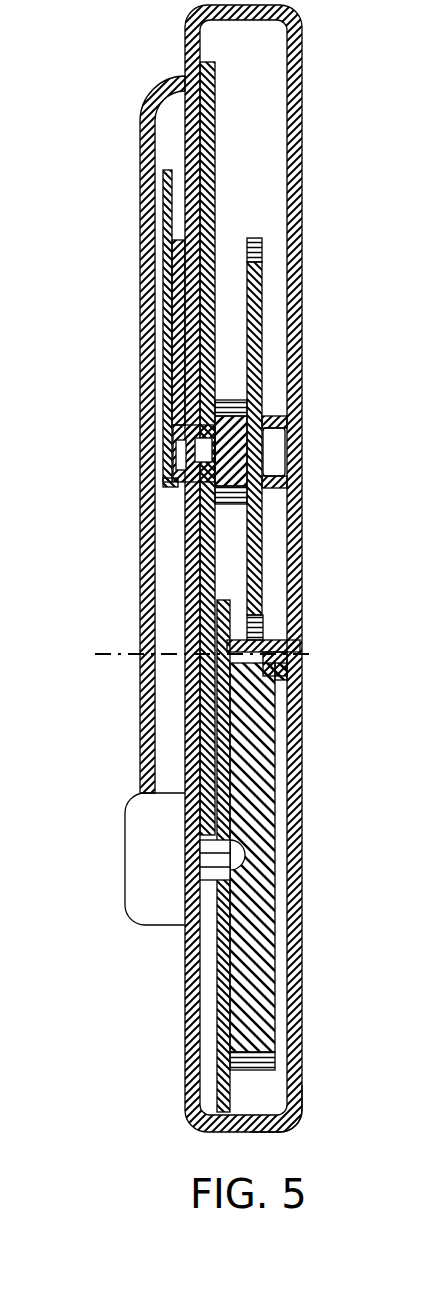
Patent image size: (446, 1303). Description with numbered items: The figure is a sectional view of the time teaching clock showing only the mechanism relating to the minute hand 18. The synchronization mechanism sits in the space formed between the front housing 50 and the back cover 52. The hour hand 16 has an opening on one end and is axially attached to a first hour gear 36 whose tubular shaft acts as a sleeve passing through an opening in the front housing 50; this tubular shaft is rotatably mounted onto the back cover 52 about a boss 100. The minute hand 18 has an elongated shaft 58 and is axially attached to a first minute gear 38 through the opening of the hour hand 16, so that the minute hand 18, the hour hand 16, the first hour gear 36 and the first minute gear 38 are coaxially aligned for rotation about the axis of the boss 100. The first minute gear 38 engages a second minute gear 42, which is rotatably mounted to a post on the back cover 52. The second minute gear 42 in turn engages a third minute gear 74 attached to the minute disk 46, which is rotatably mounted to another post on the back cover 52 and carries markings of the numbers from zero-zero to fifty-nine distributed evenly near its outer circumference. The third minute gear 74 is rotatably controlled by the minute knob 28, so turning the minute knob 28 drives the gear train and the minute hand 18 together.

The hour hand 16 is at (160, 265).
The minute hand 18 is at (165, 200).
The minute knob 28 is at (135, 858).
The first hour gear 36 is at (232, 402).
The first minute gear 38 is at (262, 288).
The second minute gear 42 is at (262, 630).
The minute disk 46 is at (218, 1005).
The front housing 50 is at (185, 1103).
The back cover 52 is at (303, 1100).
The elongated shaft 58 is at (255, 468).
The third minute gear 74 is at (250, 805).
The boss 100 is at (275, 420).